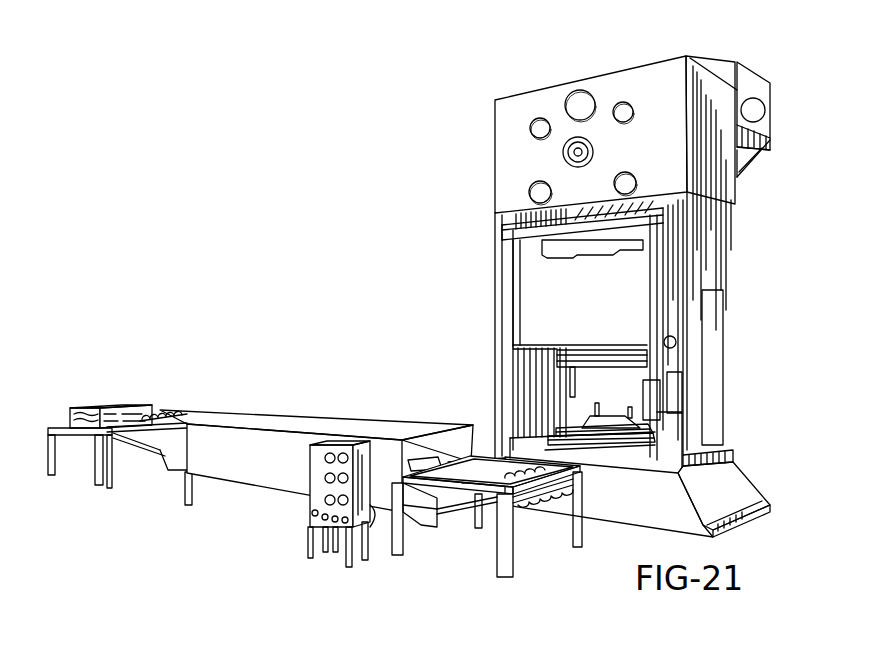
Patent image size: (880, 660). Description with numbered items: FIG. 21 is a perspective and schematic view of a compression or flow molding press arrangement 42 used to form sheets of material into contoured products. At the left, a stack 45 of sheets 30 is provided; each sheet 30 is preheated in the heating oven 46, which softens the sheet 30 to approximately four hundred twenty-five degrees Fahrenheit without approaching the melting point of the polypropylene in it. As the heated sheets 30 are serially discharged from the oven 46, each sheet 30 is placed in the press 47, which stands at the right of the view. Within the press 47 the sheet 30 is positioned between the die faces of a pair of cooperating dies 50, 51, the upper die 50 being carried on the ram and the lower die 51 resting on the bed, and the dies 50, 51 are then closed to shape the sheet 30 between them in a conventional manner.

The sheet 30 is at (115, 408).
The press arrangement 42 is at (398, 240).
The stack 45 is at (79, 402).
The heating oven 46 is at (304, 434).
The press 47 is at (757, 286).
The die 50 is at (593, 362).
The die 51 is at (607, 433).